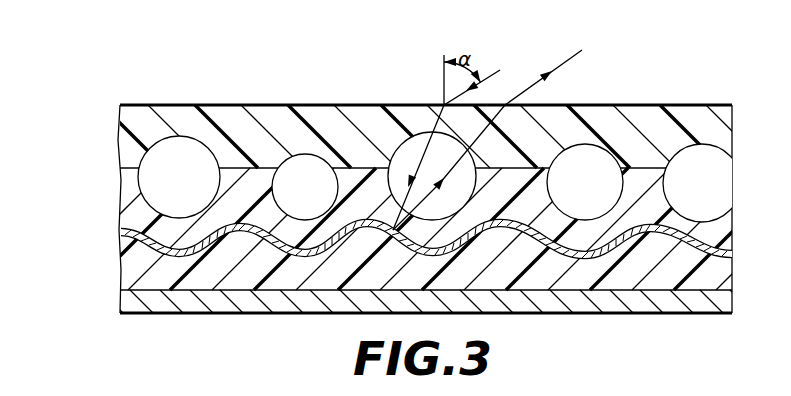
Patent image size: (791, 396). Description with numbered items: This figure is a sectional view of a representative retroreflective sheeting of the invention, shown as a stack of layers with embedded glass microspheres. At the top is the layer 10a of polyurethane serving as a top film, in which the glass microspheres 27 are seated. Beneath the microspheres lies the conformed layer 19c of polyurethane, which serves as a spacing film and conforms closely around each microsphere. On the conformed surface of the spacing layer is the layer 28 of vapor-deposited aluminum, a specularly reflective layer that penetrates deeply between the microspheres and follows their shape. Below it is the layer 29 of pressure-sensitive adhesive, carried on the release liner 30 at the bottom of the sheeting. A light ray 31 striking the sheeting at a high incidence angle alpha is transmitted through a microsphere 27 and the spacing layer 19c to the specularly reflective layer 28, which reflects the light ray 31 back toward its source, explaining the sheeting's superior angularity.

The top film layer 10a is at (118, 118).
The conformed spacing layer 19c is at (130, 202).
The glass microspheres 27 is at (307, 163).
The specularly reflective layer 28 is at (132, 236).
The pressure-sensitive adhesive layer 29 is at (137, 275).
The release liner 30 is at (145, 317).
The light ray 31 is at (572, 57).